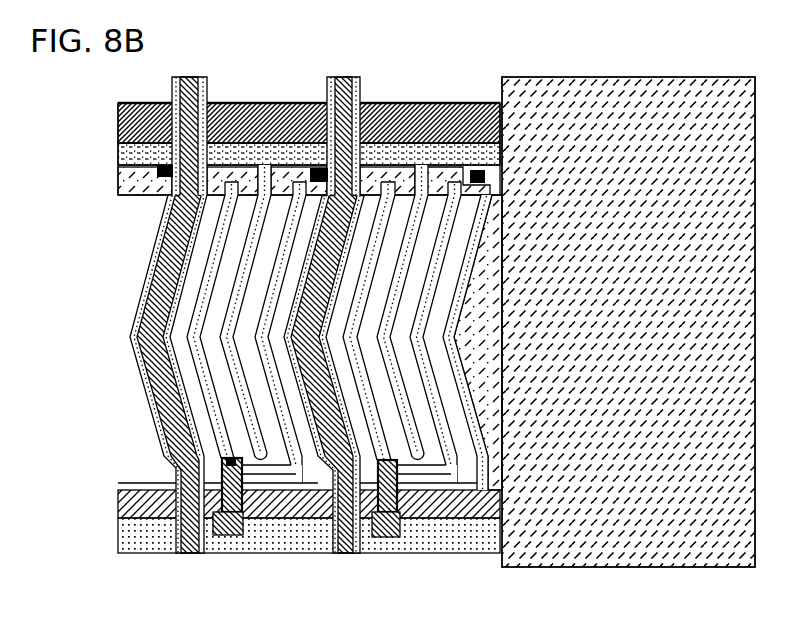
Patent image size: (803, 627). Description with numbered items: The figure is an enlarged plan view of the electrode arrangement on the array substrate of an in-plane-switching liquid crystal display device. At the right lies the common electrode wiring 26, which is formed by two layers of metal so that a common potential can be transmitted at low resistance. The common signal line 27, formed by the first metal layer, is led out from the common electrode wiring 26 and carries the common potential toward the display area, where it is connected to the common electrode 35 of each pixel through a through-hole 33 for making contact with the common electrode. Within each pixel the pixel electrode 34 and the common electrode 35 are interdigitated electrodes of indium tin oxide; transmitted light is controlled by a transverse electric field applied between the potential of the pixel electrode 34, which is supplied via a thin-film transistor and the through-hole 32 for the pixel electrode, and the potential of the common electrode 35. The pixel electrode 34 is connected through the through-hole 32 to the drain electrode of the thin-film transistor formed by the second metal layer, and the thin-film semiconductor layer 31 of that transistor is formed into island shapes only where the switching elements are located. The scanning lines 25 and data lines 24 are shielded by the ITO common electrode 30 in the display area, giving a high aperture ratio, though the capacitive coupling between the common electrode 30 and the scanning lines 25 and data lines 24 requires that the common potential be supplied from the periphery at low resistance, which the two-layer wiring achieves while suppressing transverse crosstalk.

The data line 24 is at (184, 529).
The scanning line 25 is at (121, 493).
The common electrode wiring 26 is at (608, 538).
The common signal line 27 is at (117, 189).
The ITO common electrode 30 is at (291, 549).
The thin-film semiconductor layer 31 is at (199, 552).
The through-hole for the pixel electrode 32 is at (228, 459).
The through-hole for making contact with the common electrode 33 is at (311, 169).
The pixel electrode 34 is at (197, 318).
The common electrode 35 is at (246, 273).